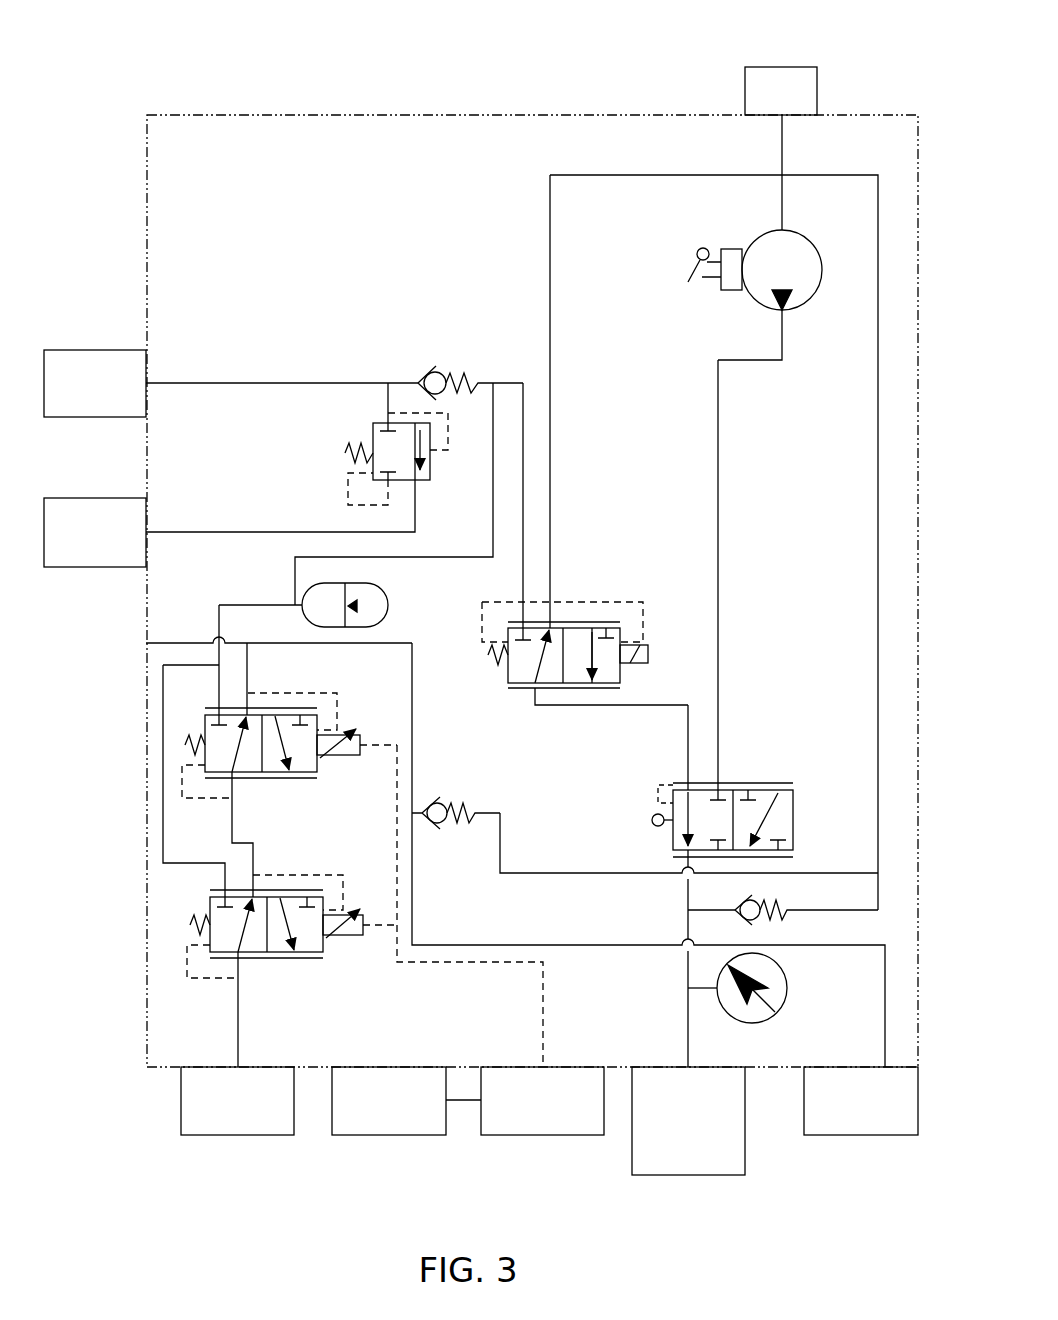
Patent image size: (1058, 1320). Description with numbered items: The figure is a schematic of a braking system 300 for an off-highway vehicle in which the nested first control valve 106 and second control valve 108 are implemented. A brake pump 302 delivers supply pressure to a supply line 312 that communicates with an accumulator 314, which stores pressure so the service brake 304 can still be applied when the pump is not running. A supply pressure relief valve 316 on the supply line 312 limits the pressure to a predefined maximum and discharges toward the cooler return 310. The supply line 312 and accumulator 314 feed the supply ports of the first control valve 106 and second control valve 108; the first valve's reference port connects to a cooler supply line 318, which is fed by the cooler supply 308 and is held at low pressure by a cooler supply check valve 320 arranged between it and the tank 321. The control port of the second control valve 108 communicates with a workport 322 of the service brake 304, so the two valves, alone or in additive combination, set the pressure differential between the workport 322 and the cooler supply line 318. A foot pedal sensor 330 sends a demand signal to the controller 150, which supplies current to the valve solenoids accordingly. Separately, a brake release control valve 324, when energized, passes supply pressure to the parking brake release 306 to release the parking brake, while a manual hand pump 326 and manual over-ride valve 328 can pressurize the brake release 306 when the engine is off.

The braking system 300 is at (858, 82).
The brake pump 302 is at (95, 348).
The service brake 304 is at (237, 1136).
The parking brake release 306 is at (689, 1176).
The cooler supply 308 is at (861, 1136).
The cooler return 310 is at (95, 568).
The supply line 312 is at (270, 381).
The accumulator 314 is at (390, 605).
The supply pressure relief valve 316 is at (430, 470).
The cooler supply line 318 is at (412, 710).
The cooler supply check valve 320 is at (437, 826).
The tank 321 is at (781, 66).
The workport 322 is at (238, 1064).
The brake release control valve 324 is at (632, 675).
The manual hand pump 326 is at (805, 312).
The manual over-ride valve 328 is at (766, 778).
The foot pedal sensor 330 is at (390, 1136).
The controller 150 is at (543, 1136).
The first control valve 106 is at (306, 789).
The second control valve 108 is at (311, 968).